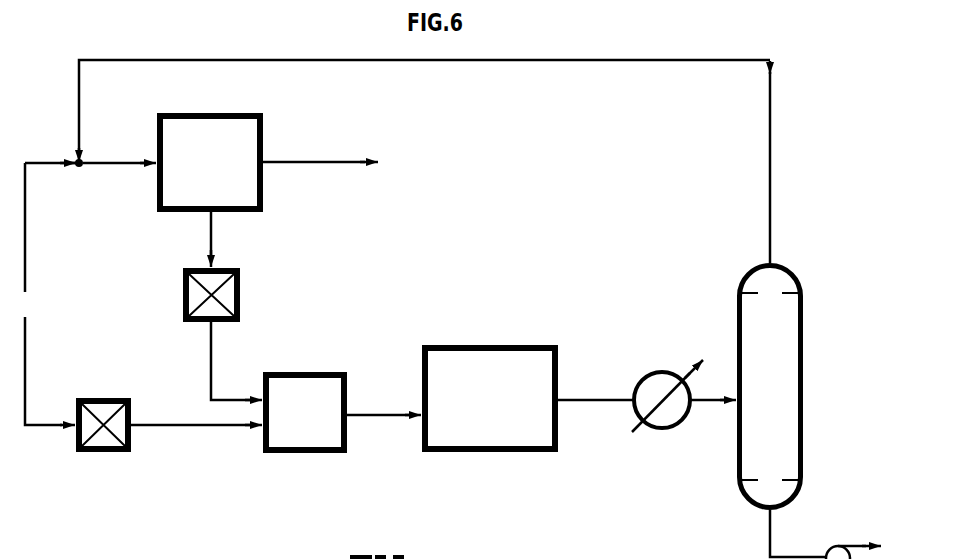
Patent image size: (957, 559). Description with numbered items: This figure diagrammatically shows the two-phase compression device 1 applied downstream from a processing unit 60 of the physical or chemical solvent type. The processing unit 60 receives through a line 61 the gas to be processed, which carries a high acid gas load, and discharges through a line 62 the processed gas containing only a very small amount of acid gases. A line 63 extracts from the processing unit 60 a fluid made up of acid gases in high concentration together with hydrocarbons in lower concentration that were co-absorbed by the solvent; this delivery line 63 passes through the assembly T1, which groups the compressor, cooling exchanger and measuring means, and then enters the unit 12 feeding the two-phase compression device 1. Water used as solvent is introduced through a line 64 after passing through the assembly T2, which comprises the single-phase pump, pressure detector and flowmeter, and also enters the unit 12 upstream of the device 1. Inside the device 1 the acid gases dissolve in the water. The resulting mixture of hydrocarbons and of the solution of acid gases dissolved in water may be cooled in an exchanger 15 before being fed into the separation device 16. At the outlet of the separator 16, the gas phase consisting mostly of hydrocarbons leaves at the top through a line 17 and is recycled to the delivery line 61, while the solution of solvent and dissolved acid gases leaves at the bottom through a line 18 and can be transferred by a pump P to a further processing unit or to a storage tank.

The two-phase compression device 1 is at (529, 398).
The mixing unit 12 is at (343, 412).
The exchanger 15 is at (662, 371).
The separation device 16 is at (770, 387).
The line 17 is at (489, 61).
The line 18 is at (768, 537).
The processing unit 60 is at (171, 162).
The line 61 is at (26, 232).
The line 62 is at (358, 158).
The line 63 is at (210, 348).
The line 64 is at (190, 424).
The assembly T1 is at (246, 269).
The assembly T2 is at (75, 396).
The pump P is at (853, 538).